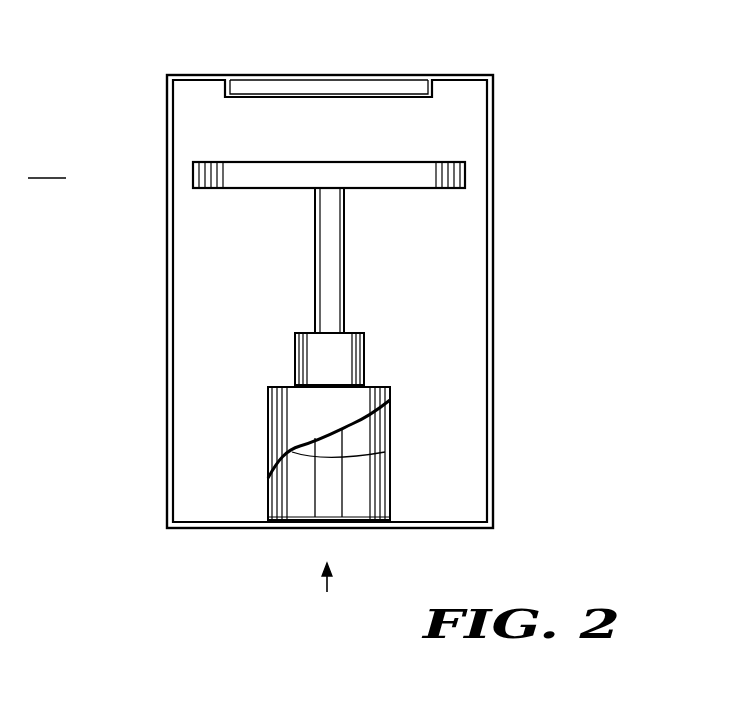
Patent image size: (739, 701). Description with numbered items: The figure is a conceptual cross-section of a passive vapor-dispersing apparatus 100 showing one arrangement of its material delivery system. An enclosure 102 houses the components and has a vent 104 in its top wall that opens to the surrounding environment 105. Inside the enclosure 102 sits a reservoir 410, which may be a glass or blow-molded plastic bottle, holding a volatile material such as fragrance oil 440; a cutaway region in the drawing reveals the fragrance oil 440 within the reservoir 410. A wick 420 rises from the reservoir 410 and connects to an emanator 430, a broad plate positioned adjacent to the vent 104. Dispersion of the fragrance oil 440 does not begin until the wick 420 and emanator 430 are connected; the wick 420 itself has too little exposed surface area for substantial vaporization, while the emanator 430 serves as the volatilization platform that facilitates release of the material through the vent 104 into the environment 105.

The passive vapor-dispersing apparatus 100 is at (330, 592).
The enclosure 102 is at (493, 247).
The vent 104 is at (393, 53).
The environment 105 is at (49, 167).
The reservoir 410 is at (268, 435).
The wick 420 is at (315, 260).
The emanator 430 is at (407, 189).
The fragrance oil 440 is at (377, 487).